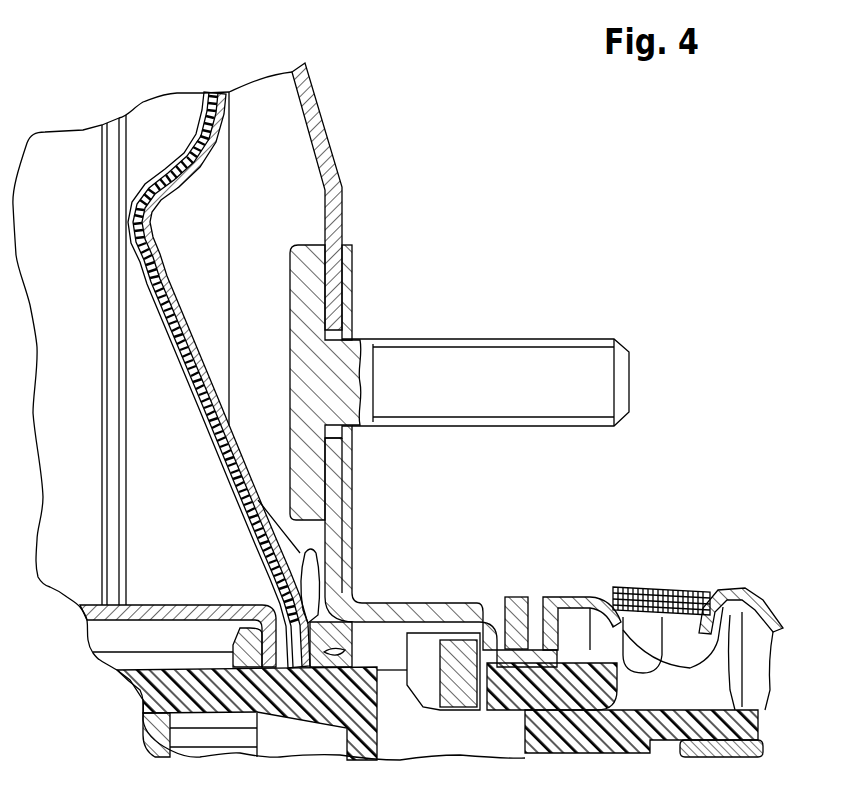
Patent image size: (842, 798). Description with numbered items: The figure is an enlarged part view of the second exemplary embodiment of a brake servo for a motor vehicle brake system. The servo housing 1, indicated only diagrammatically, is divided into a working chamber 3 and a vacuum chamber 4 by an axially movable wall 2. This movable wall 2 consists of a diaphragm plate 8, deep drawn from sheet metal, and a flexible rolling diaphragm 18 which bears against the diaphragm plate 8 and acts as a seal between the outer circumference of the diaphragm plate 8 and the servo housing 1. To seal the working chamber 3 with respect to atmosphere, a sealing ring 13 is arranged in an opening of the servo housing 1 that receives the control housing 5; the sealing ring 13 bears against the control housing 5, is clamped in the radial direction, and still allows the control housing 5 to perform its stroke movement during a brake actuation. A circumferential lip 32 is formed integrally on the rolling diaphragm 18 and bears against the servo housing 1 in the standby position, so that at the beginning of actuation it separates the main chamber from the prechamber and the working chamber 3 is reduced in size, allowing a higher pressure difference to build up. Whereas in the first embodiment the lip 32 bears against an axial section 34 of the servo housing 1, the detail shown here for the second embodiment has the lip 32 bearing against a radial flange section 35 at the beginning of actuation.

The servo housing 1 is at (328, 138).
The axially movable wall 2 is at (184, 380).
The working chamber 3 is at (268, 268).
The vacuum chamber 4 is at (182, 494).
The control housing 5 is at (768, 615).
The diaphragm plate 8 is at (160, 297).
The sealing ring 13 is at (597, 672).
The rolling diaphragm 18 is at (187, 320).
The lip 32 is at (322, 584).
The axial section 34 is at (449, 606).
The radial flange section 35 is at (332, 483).